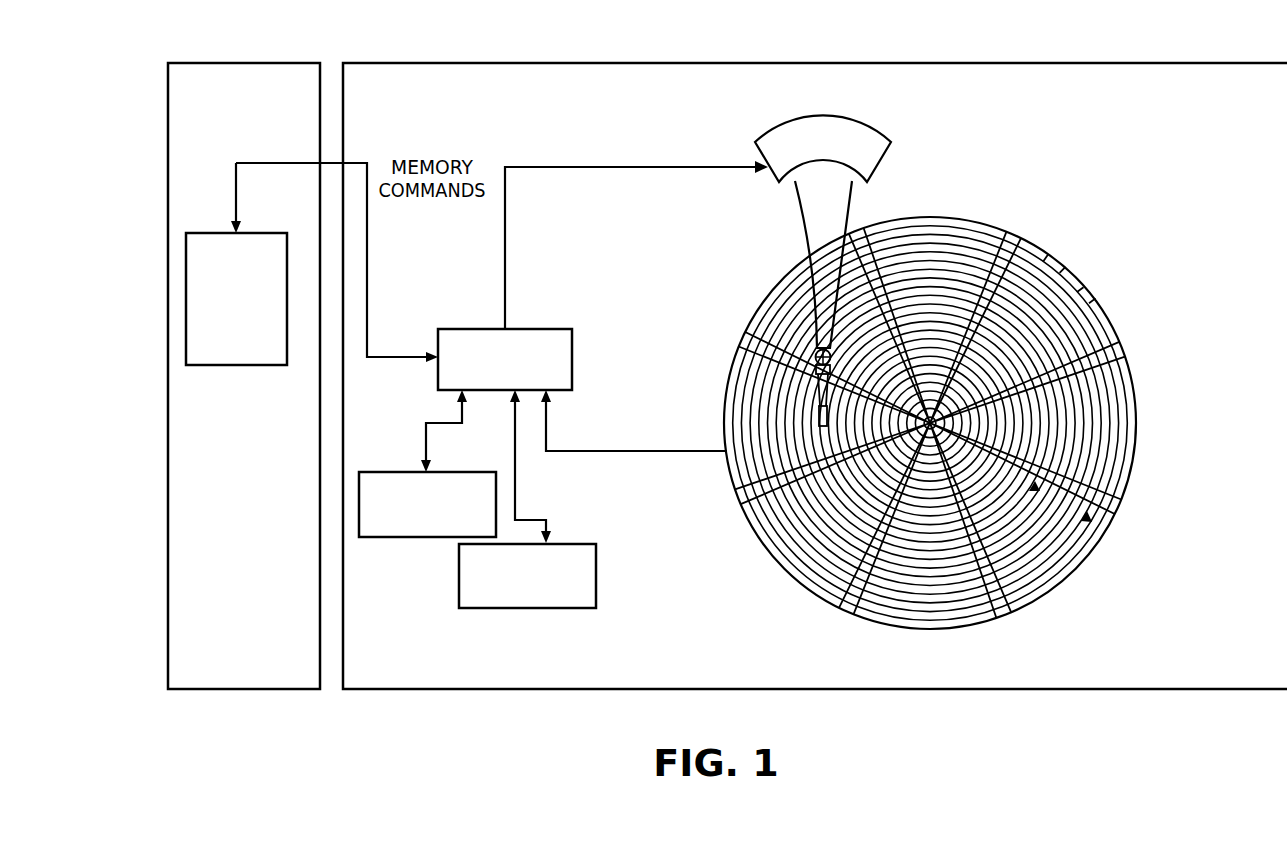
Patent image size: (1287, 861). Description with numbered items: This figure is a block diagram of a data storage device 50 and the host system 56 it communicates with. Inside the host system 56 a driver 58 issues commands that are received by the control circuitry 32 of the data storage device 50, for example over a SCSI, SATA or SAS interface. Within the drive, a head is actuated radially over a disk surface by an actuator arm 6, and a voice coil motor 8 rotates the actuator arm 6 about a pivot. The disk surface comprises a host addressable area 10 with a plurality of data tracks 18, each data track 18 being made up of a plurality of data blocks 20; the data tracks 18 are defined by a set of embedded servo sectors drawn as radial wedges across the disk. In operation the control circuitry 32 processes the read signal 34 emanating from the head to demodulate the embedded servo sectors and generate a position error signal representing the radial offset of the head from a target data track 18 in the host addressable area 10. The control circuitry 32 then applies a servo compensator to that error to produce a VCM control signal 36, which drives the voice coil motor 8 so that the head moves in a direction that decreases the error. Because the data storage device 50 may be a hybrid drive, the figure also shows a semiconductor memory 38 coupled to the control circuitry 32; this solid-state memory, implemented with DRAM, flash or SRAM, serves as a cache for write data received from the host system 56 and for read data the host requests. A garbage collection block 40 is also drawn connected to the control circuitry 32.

The host system 56 is at (246, 62).
The data storage device 50 is at (415, 62).
The driver 58 is at (224, 367).
The control circuitry 32 is at (554, 327).
The VCM control signal 36 is at (504, 297).
The read signal 34 is at (619, 450).
The semiconductor memory 38 is at (556, 610).
The garbage collection 40 is at (385, 540).
The voice coil motor 8 is at (768, 178).
The actuator arm 6 is at (744, 342).
The data track 18 is at (940, 226).
The data block 20 is at (1092, 300).
The host addressable area 10 is at (1101, 521).